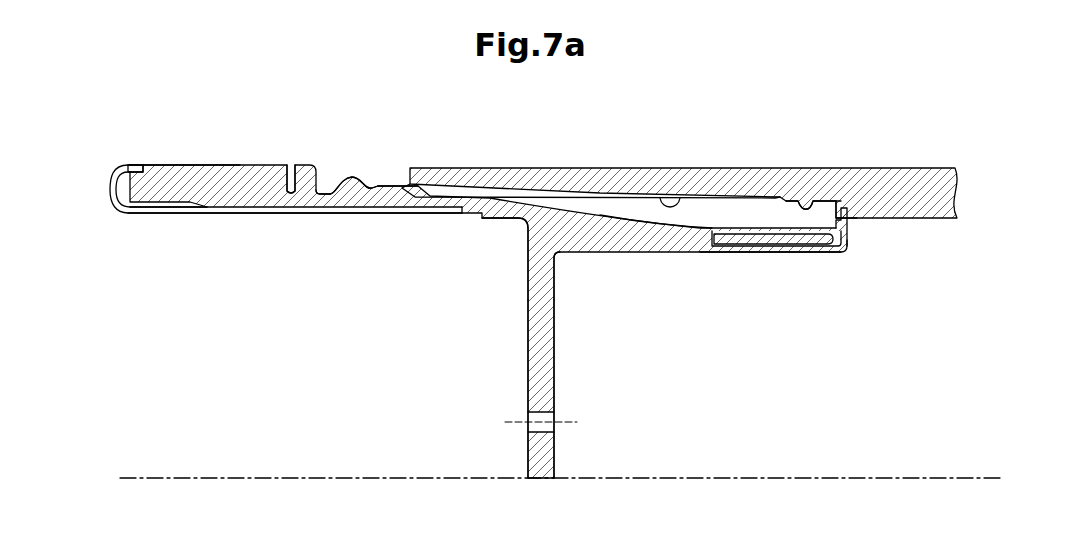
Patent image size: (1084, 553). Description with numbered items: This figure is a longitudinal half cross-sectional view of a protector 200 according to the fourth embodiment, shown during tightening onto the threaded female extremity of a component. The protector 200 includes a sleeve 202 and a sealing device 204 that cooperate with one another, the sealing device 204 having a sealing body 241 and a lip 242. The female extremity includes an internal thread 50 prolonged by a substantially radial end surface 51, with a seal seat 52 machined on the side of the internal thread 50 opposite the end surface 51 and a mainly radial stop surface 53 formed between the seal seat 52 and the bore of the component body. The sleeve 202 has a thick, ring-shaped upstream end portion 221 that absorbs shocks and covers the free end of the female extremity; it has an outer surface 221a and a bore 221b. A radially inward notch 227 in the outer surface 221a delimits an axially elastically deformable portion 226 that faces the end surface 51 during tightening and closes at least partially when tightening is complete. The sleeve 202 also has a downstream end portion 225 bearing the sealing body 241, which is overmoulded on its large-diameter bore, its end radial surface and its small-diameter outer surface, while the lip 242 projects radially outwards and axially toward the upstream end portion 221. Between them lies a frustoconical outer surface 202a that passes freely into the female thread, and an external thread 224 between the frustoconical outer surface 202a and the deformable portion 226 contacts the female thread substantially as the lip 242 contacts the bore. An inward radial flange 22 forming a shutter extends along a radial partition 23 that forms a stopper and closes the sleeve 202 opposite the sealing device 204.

The protector 200 is at (133, 161).
The sleeve 202 is at (232, 164).
The frustoconical outer surface 202a is at (597, 213).
The sealing device 204 is at (779, 256).
The flange 22 is at (547, 240).
The radial partition 23 is at (540, 363).
The internal thread 50 is at (668, 203).
The end surface 51 is at (398, 172).
The seal seat 52 is at (822, 206).
The stop surface 53 is at (847, 208).
The upstream end portion 221 is at (151, 196).
The outer surface 221a is at (205, 165).
The bore 221b is at (247, 213).
The external thread 224 is at (352, 187).
The downstream end portion 225 is at (646, 247).
The elastically deformable portion 226 is at (325, 190).
The notch 227 is at (292, 164).
The sealing body 241 is at (847, 256).
The lip 242 is at (849, 225).